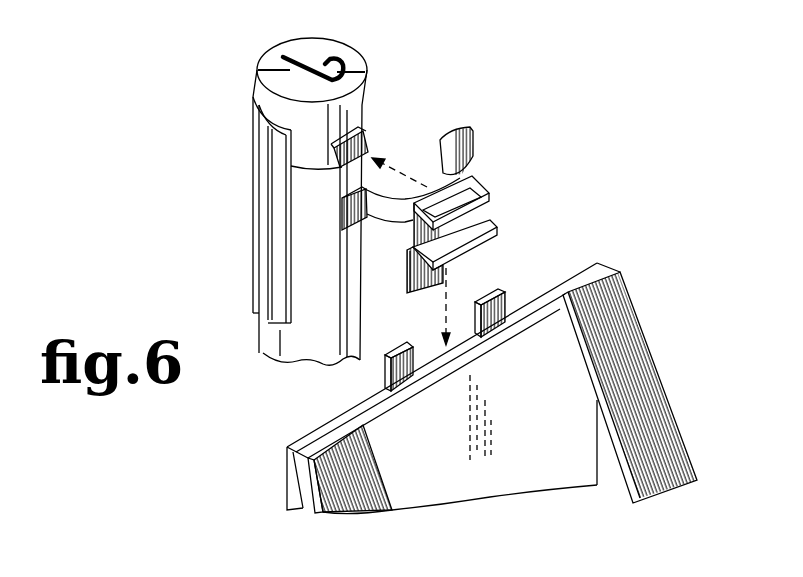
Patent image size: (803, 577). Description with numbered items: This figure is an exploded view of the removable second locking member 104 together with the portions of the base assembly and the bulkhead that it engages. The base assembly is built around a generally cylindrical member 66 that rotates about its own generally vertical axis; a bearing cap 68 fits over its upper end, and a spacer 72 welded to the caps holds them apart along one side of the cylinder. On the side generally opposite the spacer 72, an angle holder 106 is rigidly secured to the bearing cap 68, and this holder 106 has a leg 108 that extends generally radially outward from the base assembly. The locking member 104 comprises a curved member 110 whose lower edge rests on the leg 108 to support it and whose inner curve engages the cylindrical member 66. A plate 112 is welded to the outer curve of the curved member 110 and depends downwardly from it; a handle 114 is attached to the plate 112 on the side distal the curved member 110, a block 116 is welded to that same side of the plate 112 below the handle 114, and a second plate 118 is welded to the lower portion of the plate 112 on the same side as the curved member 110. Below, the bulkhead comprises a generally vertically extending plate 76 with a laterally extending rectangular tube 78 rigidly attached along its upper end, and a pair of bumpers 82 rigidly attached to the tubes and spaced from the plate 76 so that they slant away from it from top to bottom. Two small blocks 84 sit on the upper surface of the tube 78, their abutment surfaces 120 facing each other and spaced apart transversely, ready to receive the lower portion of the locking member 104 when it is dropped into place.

The cylindrical member 66 is at (302, 343).
The bearing cap 68 is at (353, 63).
The spacer 72 is at (252, 234).
The plate 76 is at (553, 440).
The rectangular tube 78 is at (588, 271).
The bumper 82 is at (371, 477).
The small block 84 is at (404, 373).
The second locking member 104 is at (500, 211).
The holder 106 is at (332, 154).
The leg 108 is at (371, 142).
The curved member 110 is at (392, 207).
The plate 112 is at (481, 157).
The handle 114 is at (462, 190).
The block 116 is at (496, 229).
The second plate 118 is at (468, 259).
The abutment surface 120 is at (473, 307).